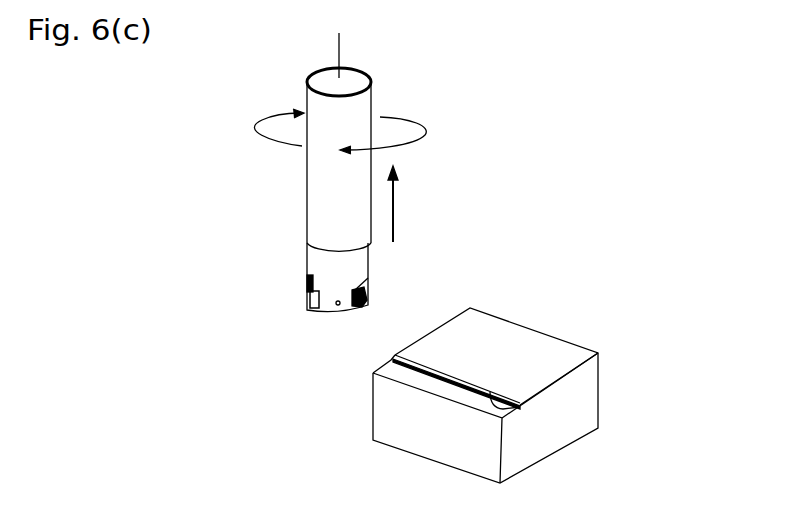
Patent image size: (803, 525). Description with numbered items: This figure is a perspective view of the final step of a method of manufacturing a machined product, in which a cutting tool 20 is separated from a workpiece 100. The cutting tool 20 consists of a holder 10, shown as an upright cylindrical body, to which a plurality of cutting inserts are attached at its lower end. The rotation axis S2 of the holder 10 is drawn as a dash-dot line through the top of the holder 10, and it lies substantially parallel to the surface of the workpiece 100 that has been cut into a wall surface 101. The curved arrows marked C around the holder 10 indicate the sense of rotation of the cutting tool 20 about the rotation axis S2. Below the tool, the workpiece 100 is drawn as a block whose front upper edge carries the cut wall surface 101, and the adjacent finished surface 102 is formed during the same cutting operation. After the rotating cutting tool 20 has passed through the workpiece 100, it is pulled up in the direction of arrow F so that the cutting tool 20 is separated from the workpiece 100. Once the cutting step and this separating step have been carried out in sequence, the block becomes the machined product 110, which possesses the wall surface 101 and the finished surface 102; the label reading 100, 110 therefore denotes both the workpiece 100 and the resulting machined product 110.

The holder 10 is at (290, 161).
The cutting tool 20 is at (300, 76).
The workpiece 100 is at (530, 403).
The machined product 110 is at (496, 403).
The wall surface 101 is at (510, 411).
The finished surface 102 is at (467, 398).
The rotation direction C is at (337, 131).
The arrow F is at (401, 204).
The rotation axis S2 is at (341, 52).